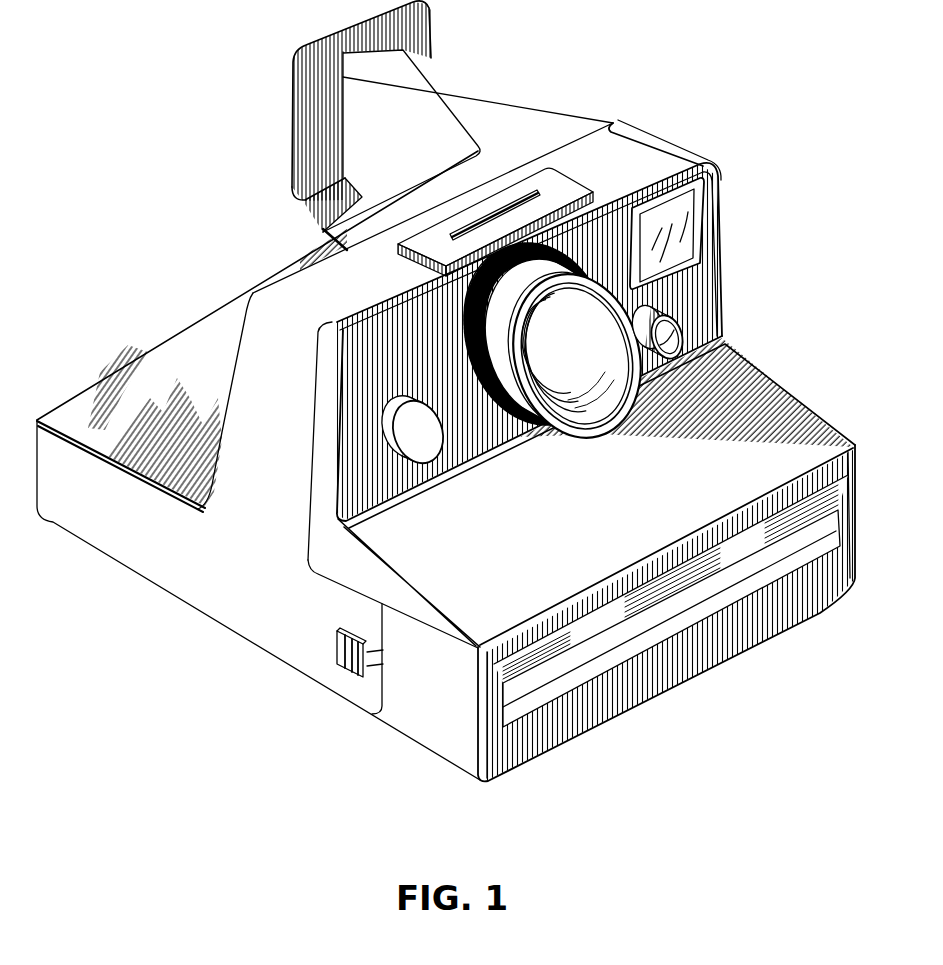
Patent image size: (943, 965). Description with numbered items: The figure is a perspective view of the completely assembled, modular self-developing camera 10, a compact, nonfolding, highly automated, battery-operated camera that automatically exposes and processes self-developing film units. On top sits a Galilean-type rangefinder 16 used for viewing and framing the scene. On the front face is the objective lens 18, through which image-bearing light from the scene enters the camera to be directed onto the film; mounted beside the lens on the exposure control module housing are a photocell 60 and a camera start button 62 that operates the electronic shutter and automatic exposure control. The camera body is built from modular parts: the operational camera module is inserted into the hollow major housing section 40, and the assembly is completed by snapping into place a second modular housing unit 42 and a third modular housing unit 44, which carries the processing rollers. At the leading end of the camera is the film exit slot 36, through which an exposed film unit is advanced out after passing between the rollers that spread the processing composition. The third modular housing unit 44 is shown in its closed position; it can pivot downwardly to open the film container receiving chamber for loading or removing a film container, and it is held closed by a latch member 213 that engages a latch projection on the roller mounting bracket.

The self-developing camera 10 is at (638, 113).
The Galilean-type rangefinder 16 is at (495, 83).
The objective lens 18 is at (538, 378).
The film exit slot 36 is at (553, 670).
The major housing section 40 is at (267, 343).
The second modular housing unit 42 is at (798, 398).
The third modular housing unit 44 is at (440, 727).
The photocell 60 is at (668, 336).
The camera start button 62 is at (413, 457).
The latch member 213 is at (340, 664).